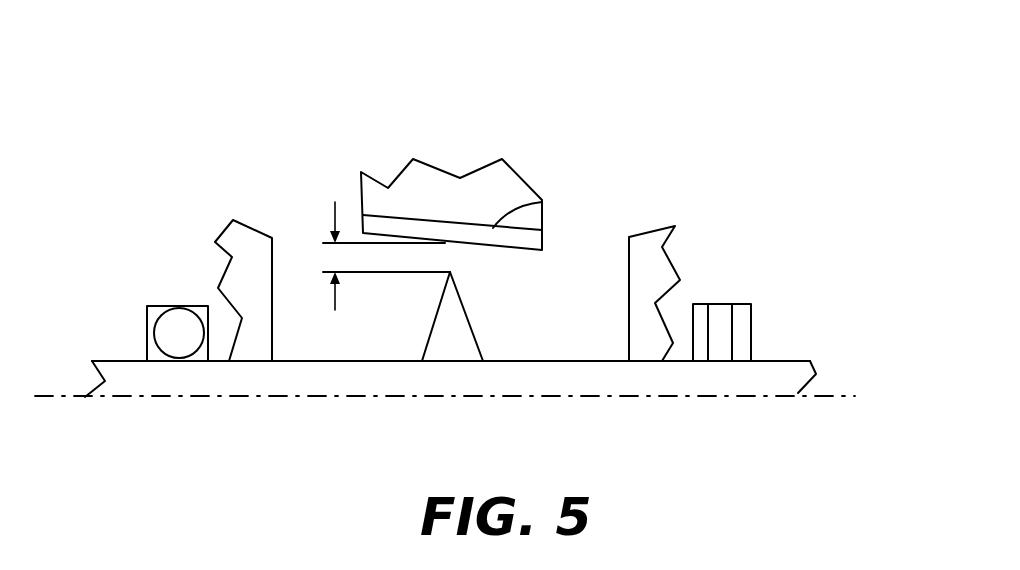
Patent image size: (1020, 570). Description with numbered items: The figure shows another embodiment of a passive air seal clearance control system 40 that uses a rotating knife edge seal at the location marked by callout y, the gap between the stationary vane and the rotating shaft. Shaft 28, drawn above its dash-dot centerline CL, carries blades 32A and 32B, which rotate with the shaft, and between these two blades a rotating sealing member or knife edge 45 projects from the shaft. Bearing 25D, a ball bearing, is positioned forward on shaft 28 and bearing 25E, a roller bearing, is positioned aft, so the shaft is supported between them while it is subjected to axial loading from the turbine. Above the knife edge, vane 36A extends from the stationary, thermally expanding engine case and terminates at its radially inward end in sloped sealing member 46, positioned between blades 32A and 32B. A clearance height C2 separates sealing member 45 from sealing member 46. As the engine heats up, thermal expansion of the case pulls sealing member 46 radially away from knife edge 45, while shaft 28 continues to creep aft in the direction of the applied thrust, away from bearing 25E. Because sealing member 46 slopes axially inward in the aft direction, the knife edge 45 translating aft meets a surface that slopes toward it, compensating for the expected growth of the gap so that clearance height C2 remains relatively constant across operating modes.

The passive air seal clearance control system 40 is at (476, 139).
The vane 36A is at (459, 183).
The sloped sealing member 46 is at (542, 202).
The blade 32A is at (232, 243).
The blade 32B is at (665, 262).
The bearing 25D is at (147, 319).
The bearing 25E is at (751, 323).
The rotating sealing member or knife edge 45 is at (460, 323).
The shaft 28 is at (140, 380).
The clearance height C2 is at (386, 259).
The centerline CL is at (837, 390).
The callout Y y is at (690, 92).